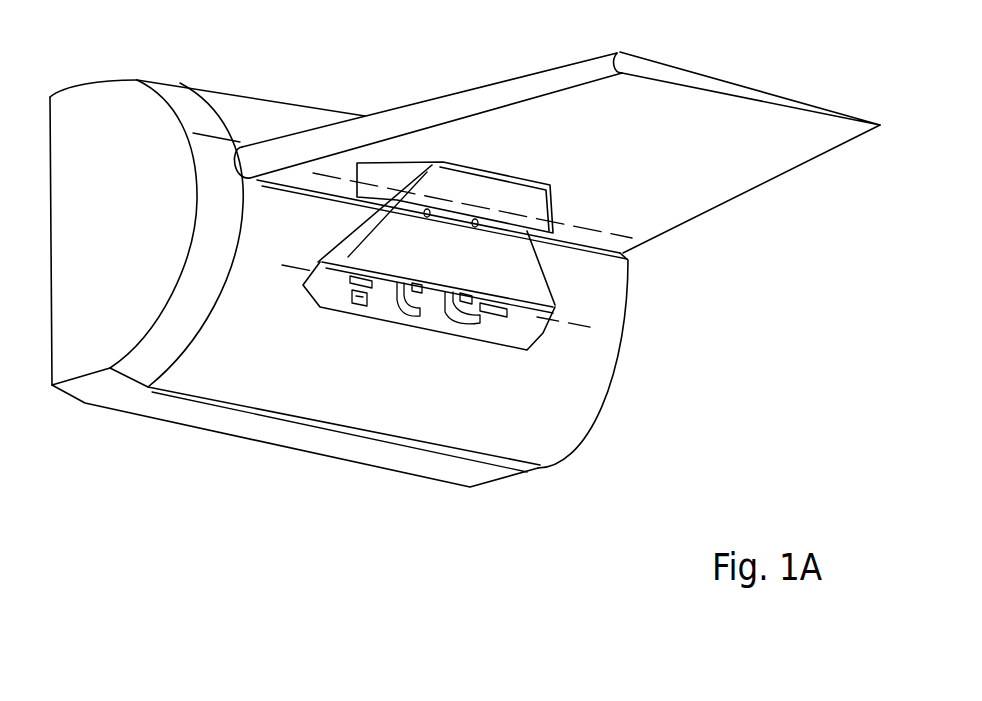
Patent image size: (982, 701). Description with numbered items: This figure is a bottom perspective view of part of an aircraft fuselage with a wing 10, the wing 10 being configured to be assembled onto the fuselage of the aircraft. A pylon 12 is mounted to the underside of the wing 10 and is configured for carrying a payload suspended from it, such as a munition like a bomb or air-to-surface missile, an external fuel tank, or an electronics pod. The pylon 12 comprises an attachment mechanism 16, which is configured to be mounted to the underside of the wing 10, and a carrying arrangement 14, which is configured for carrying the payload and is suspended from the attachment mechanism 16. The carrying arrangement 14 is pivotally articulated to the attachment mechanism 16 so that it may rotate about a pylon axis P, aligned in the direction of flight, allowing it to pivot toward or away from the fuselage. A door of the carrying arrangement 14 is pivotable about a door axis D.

The wing 10 is at (502, 92).
The pylon 12 is at (603, 303).
The carrying arrangement 14 is at (533, 295).
The attachment mechanism 16 is at (553, 201).
The pylon axis P is at (330, 178).
The door axis D is at (296, 268).